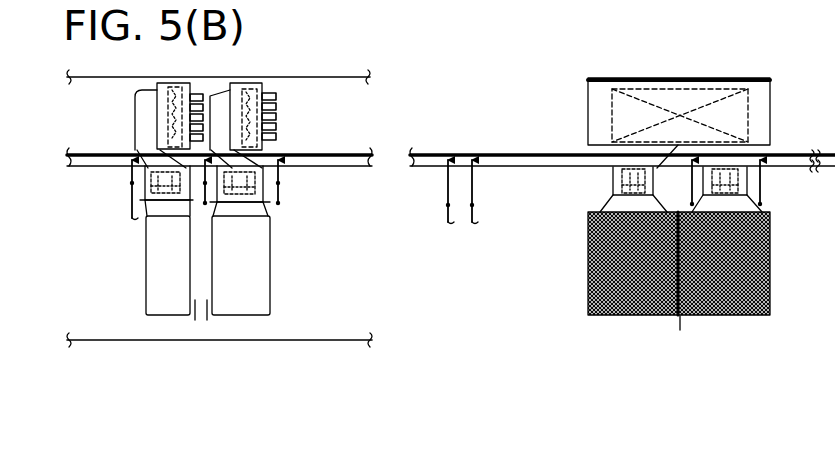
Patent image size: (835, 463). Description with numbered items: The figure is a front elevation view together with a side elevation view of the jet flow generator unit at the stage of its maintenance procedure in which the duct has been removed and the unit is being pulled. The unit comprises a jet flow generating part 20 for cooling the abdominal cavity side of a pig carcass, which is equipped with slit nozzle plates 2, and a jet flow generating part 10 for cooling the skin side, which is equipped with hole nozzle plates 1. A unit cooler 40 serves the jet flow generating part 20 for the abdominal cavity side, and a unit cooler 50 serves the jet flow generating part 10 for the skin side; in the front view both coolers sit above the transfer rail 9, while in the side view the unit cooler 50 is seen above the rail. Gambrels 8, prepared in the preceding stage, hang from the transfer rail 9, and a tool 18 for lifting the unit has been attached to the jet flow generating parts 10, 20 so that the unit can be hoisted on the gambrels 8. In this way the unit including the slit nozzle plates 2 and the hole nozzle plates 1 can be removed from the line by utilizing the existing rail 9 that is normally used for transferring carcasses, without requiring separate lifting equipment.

The hole nozzle plate 1 is at (207, 302).
The slit nozzle plate 2 is at (197, 300).
The gambrel 8 is at (132, 183).
The transfer rail 9 is at (432, 168).
The jet flow generating part for cooling skin side 10 is at (245, 305).
The tool for lifting the unit 18 is at (278, 205).
The jet flow generating part for cooling abdominal cavity side 20 is at (167, 307).
The unit cooler 40 is at (135, 91).
The unit cooler 50 is at (256, 83).